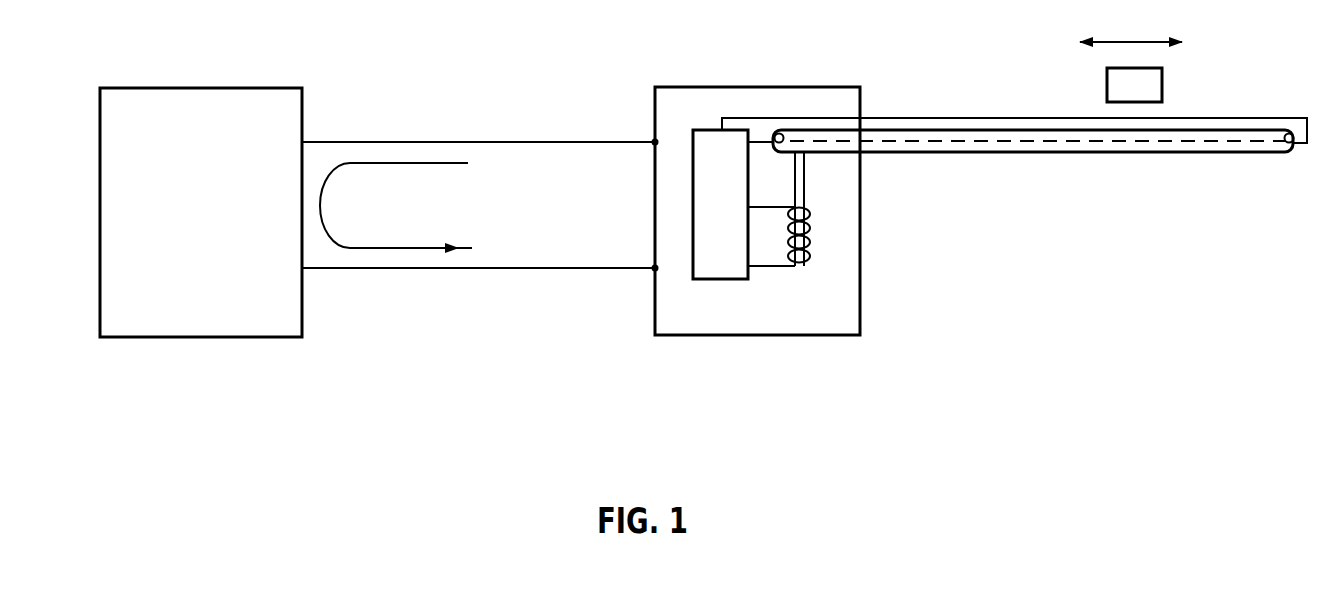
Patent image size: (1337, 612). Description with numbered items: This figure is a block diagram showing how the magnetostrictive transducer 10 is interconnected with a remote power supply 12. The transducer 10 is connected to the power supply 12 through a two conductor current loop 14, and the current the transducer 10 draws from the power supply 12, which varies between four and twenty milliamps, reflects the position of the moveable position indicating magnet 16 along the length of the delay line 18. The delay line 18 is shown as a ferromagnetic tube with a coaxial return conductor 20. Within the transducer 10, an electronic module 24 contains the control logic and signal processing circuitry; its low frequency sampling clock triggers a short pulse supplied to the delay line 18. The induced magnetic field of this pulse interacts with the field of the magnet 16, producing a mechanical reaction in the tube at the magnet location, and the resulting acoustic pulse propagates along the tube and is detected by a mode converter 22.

The magnetostrictive transducer 10 is at (825, 85).
The remote power supply 12 is at (267, 87).
The two conductor current loop 14 is at (493, 122).
The position indicating magnet 16 is at (1162, 85).
The delay line 18 is at (1060, 152).
The waveguide sleeve / return conductor 20 is at (1237, 118).
The mode converter 22 is at (798, 270).
The electronic module 24 is at (722, 283).